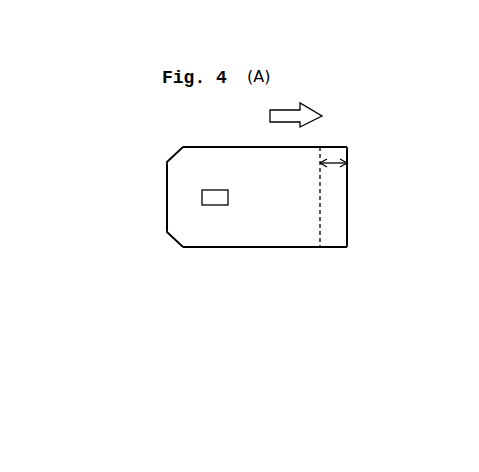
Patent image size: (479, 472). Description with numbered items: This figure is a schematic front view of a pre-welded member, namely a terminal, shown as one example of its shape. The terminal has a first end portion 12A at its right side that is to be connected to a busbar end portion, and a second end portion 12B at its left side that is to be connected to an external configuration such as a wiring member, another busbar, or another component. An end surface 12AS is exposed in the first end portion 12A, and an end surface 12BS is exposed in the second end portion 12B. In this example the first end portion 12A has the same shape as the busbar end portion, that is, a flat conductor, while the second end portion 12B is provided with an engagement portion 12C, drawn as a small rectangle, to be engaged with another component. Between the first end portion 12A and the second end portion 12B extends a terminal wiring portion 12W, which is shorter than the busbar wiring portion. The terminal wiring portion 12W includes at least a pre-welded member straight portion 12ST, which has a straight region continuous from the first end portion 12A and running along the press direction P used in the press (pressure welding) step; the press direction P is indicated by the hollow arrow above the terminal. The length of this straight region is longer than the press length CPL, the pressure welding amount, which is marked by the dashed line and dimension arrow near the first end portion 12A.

The first end portion 12A is at (358, 193).
The end surface 12AS is at (347, 225).
The second end portion 12B is at (167, 215).
The end surface 12BS is at (167, 215).
The engagement portion 12C is at (206, 205).
The terminal wiring portion 12W is at (250, 249).
The pre-welded member straight portion 12ST is at (290, 258).
The press length CPL is at (333, 156).
The press direction P is at (296, 107).